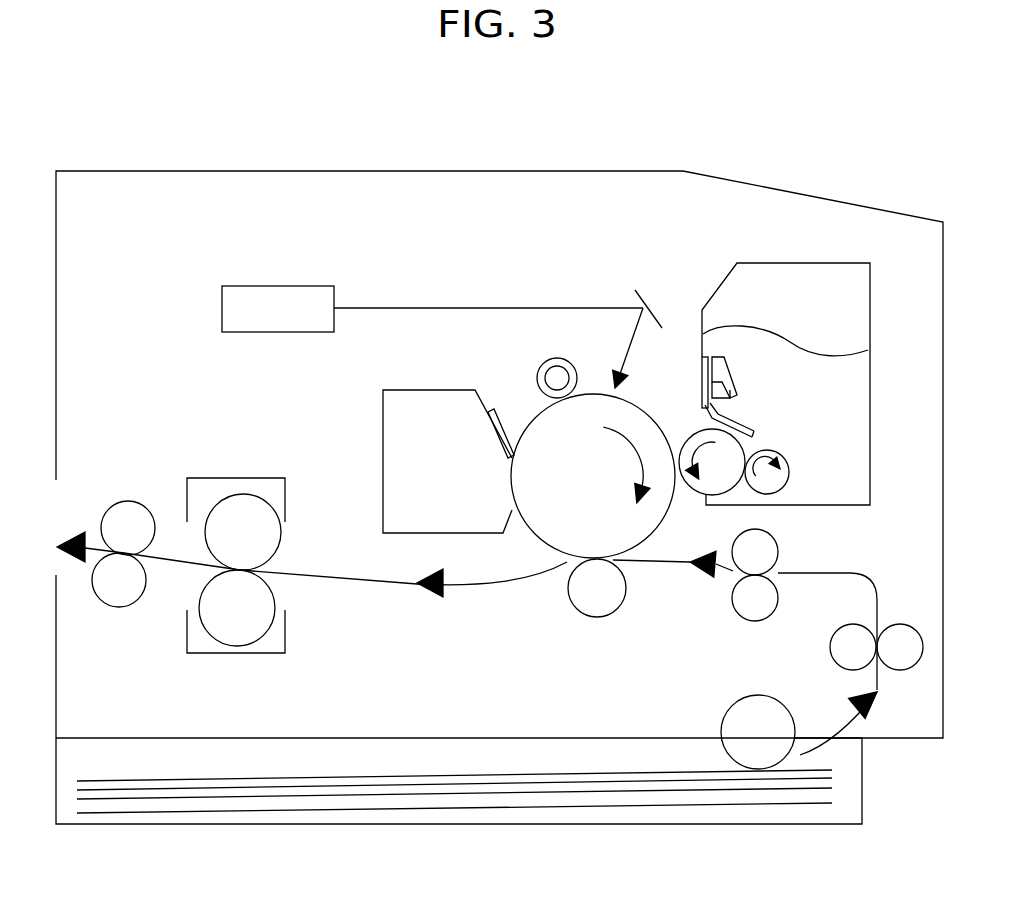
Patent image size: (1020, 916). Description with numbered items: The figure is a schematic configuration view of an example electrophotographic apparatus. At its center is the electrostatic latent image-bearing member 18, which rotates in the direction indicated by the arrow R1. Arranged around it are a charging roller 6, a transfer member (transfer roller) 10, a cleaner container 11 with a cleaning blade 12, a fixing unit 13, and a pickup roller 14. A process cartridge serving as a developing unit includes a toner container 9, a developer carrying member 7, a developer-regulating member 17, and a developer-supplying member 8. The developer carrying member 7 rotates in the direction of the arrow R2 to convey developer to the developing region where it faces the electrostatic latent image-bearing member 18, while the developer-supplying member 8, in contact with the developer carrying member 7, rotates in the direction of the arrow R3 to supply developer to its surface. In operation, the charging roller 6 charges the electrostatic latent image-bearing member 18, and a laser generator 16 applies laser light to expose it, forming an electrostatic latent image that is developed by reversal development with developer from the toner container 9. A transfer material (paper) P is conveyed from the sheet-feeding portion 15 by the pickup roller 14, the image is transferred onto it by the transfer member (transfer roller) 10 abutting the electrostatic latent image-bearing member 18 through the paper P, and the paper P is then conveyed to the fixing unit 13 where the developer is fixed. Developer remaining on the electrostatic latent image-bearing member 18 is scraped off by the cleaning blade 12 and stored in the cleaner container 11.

The charging roller 6 is at (562, 358).
The developer carrying member 7 is at (730, 492).
The developer-supplying member 8 is at (770, 450).
The toner container 9 is at (795, 263).
The transfer member (transfer roller) 10 is at (600, 618).
The cleaner container 11 is at (425, 390).
The cleaning blade 12 is at (506, 431).
The fixing unit 13 is at (236, 551).
The pickup roller 14 is at (767, 758).
The sheet-feeding portion 15 is at (618, 805).
The laser generator 16 is at (270, 286).
The developer-regulating member 17 is at (740, 432).
The electrostatic latent image-bearing member 18 is at (642, 407).
The arrow R1 is at (626, 465).
The arrow R2 is at (710, 461).
The arrow R3 is at (788, 474).
The transfer material (paper) P is at (467, 643).